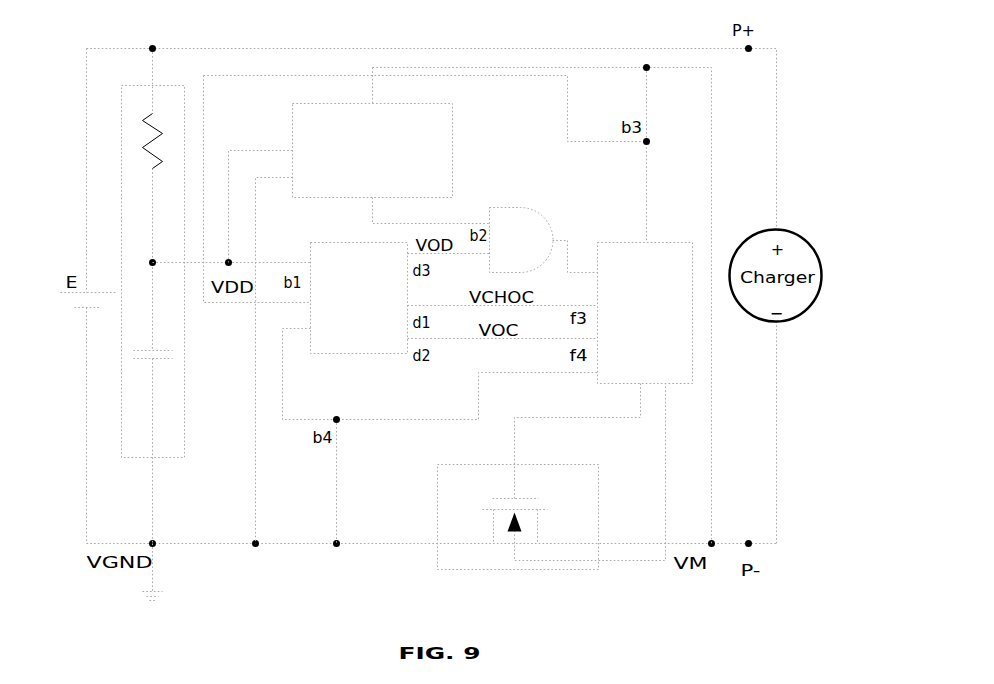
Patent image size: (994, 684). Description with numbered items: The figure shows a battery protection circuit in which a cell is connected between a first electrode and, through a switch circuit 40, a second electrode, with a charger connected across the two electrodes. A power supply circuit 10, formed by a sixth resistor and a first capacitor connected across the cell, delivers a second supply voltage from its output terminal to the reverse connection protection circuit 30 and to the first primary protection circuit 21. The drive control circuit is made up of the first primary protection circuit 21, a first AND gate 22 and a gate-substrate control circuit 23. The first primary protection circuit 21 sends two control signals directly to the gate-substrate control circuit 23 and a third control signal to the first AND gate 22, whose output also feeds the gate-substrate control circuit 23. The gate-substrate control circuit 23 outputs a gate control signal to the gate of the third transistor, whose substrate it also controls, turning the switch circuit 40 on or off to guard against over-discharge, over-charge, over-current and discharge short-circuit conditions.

The power supply circuit 10 is at (165, 85).
The first primary protection circuit 21 is at (345, 354).
The first AND gate 22 is at (522, 207).
The gate-substrate control circuit 23 is at (632, 242).
The reverse connection protection circuit 30 is at (292, 117).
The switch circuit 40 is at (437, 500).